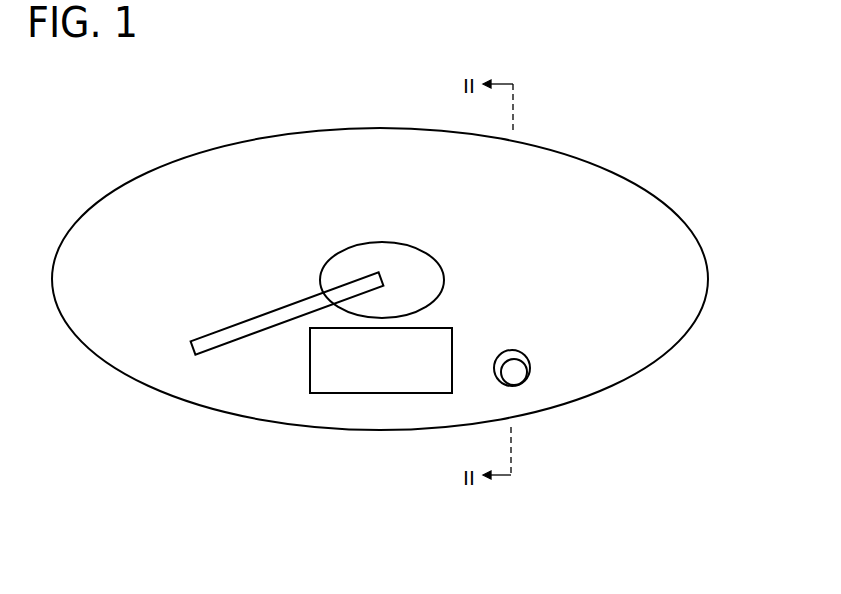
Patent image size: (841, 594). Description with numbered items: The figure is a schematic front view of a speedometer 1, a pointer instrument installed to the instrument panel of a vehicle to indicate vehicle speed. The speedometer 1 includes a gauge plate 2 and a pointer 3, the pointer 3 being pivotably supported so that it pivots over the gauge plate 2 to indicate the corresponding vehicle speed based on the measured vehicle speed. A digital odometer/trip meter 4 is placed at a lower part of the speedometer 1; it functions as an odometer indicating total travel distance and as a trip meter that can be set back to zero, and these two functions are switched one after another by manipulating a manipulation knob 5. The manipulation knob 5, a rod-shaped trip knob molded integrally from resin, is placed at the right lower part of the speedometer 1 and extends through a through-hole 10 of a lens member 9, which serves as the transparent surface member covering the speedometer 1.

The speedometer 1 is at (217, 153).
The gauge plate 2 is at (263, 390).
The pointer 3 is at (217, 345).
The odometer/trip meter 4 is at (397, 393).
The manipulation knob 5 is at (515, 373).
The lens member 9 is at (602, 183).
The through-hole 10 is at (530, 358).